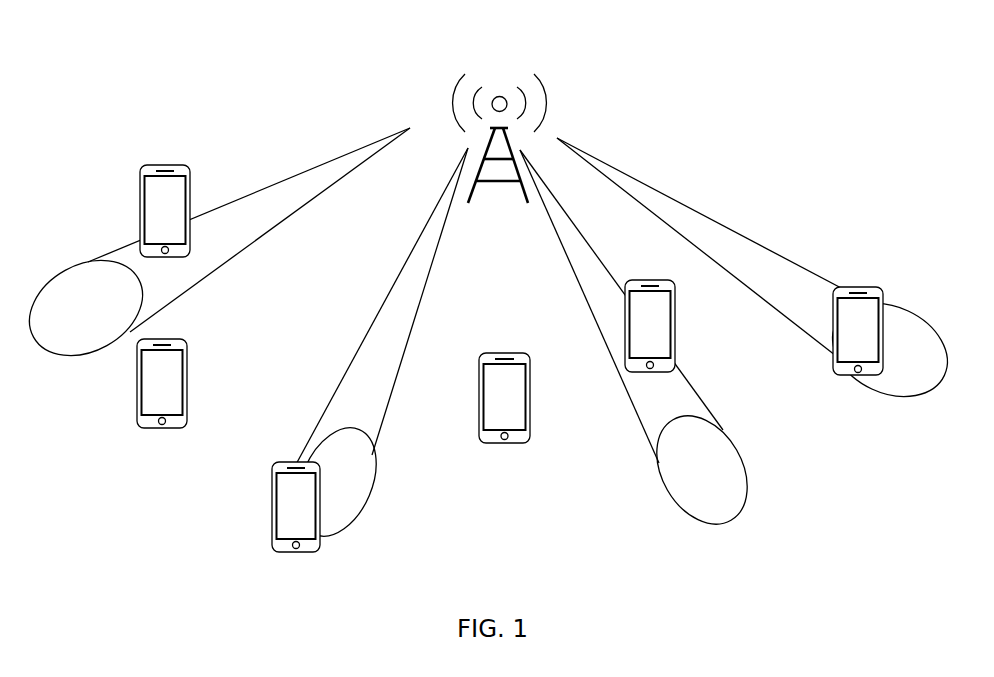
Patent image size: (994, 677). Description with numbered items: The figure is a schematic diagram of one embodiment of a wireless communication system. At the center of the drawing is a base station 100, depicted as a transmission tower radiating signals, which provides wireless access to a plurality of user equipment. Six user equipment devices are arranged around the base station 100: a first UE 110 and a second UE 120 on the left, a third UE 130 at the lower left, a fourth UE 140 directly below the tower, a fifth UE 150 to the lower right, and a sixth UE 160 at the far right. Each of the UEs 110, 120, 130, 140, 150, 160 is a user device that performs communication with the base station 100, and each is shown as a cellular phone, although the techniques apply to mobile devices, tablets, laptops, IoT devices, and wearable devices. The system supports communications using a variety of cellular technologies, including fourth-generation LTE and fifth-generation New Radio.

The base station 100 is at (502, 72).
The user equipment 110 is at (175, 165).
The user equipment 120 is at (175, 339).
The user equipment 130 is at (308, 552).
The user equipment 140 is at (505, 443).
The user equipment 150 is at (635, 280).
The user equipment 160 is at (868, 287).